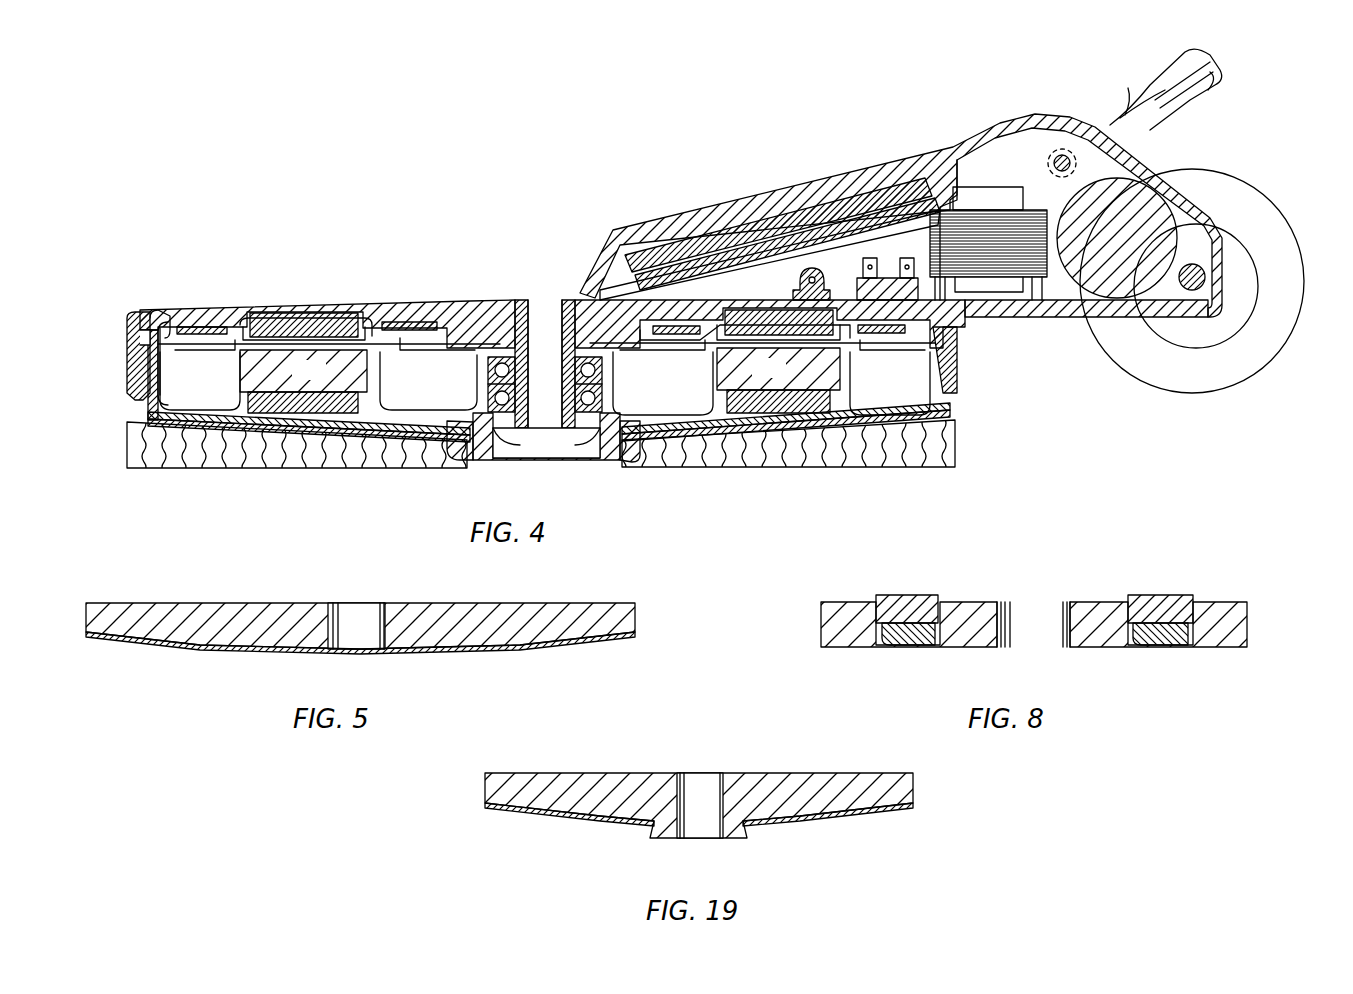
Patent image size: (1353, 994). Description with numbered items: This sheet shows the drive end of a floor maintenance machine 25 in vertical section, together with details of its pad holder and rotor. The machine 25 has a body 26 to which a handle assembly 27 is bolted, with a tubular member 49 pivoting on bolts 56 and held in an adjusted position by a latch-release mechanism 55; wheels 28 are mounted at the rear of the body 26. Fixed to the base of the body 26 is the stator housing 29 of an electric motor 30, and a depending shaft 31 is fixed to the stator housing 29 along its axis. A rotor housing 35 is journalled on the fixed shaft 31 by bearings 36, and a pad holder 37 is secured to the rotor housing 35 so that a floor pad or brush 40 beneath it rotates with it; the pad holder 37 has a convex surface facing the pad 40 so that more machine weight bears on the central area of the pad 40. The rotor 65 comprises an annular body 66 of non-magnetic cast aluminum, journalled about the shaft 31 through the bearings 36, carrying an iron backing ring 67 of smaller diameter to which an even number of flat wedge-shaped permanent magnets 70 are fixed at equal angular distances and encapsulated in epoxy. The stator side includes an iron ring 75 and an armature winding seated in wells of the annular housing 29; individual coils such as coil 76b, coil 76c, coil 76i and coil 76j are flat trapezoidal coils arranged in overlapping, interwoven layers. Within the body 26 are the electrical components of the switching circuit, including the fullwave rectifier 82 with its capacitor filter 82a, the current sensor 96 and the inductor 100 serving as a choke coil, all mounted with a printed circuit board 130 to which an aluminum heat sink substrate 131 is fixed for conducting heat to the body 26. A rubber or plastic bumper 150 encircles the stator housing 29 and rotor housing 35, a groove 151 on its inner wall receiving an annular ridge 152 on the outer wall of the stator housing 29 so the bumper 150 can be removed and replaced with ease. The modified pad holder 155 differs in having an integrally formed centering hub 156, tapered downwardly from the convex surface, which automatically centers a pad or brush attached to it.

In FIG. 4, the machine 25 is at (618, 205).
In FIG. 4, the body 26 is at (928, 150).
In FIG. 4, the handle assembly 27 is at (1150, 60).
In FIG. 4, the wheels 28 is at (1258, 182).
In FIG. 4, the stator housing 29 is at (440, 302).
In FIG. 4, the motor 30 is at (506, 280).
In FIG. 4, the shaft 31 is at (568, 300).
In FIG. 4, the rotor housing 35 is at (160, 402).
In FIG. 5, the rotor housing 35 is at (470, 603).
In FIG. 19, the rotor housing 35 is at (772, 773).
In FIG. 4, the bearings 36 is at (546, 408).
In FIG. 4, the pad holder 37 is at (940, 410).
In FIG. 5, the pad holder 37 is at (265, 654).
In FIG. 4, the floor maintenance pad or brush 40 is at (955, 445).
In FIG. 4, the tubular member 49 is at (1190, 100).
In FIG. 4, the latch-release mechanism 55 is at (1060, 150).
In FIG. 4, the bolts 56 is at (1050, 155).
In FIG. 4, the rotor or permanent magnet assembly 65 is at (232, 424).
In FIG. 8, the rotor or permanent magnet assembly 65 is at (793, 616).
In FIG. 4, the annular body 66 is at (470, 460).
In FIG. 8, the annular body 66 is at (838, 602).
In FIG. 4, the iron backing ring 67 is at (312, 403).
In FIG. 8, the iron backing ring 67 is at (907, 640).
In FIG. 4, the permanent magnets 70 is at (540, 370).
In FIG. 8, the permanent magnets 70 is at (913, 595).
In FIG. 4, the iron ring 75 is at (305, 313).
In FIG. 4, the coil 76b is at (245, 318).
In FIG. 4, the coil 76c is at (200, 326).
In FIG. 4, the coil 76i is at (688, 326).
In FIG. 4, the coil 76j is at (722, 322).
In FIG. 4, the fullwave rectifier 82 is at (884, 278).
In FIG. 4, the capacitor filter 82a is at (1135, 195).
In FIG. 4, the current sensor 96 is at (813, 270).
In FIG. 4, the inductor 100 is at (976, 197).
In FIG. 4, the printed circuit board 130 is at (835, 195).
In FIG. 4, the heat sink substrate 131 is at (680, 255).
In FIG. 4, the bumper 150 is at (128, 320).
In FIG. 4, the groove 151 is at (130, 340).
In FIG. 4, the annular ridge 152 is at (163, 318).
In FIG. 19, the pad holder 155 is at (768, 824).
In FIG. 19, the centering hub 156 is at (667, 838).